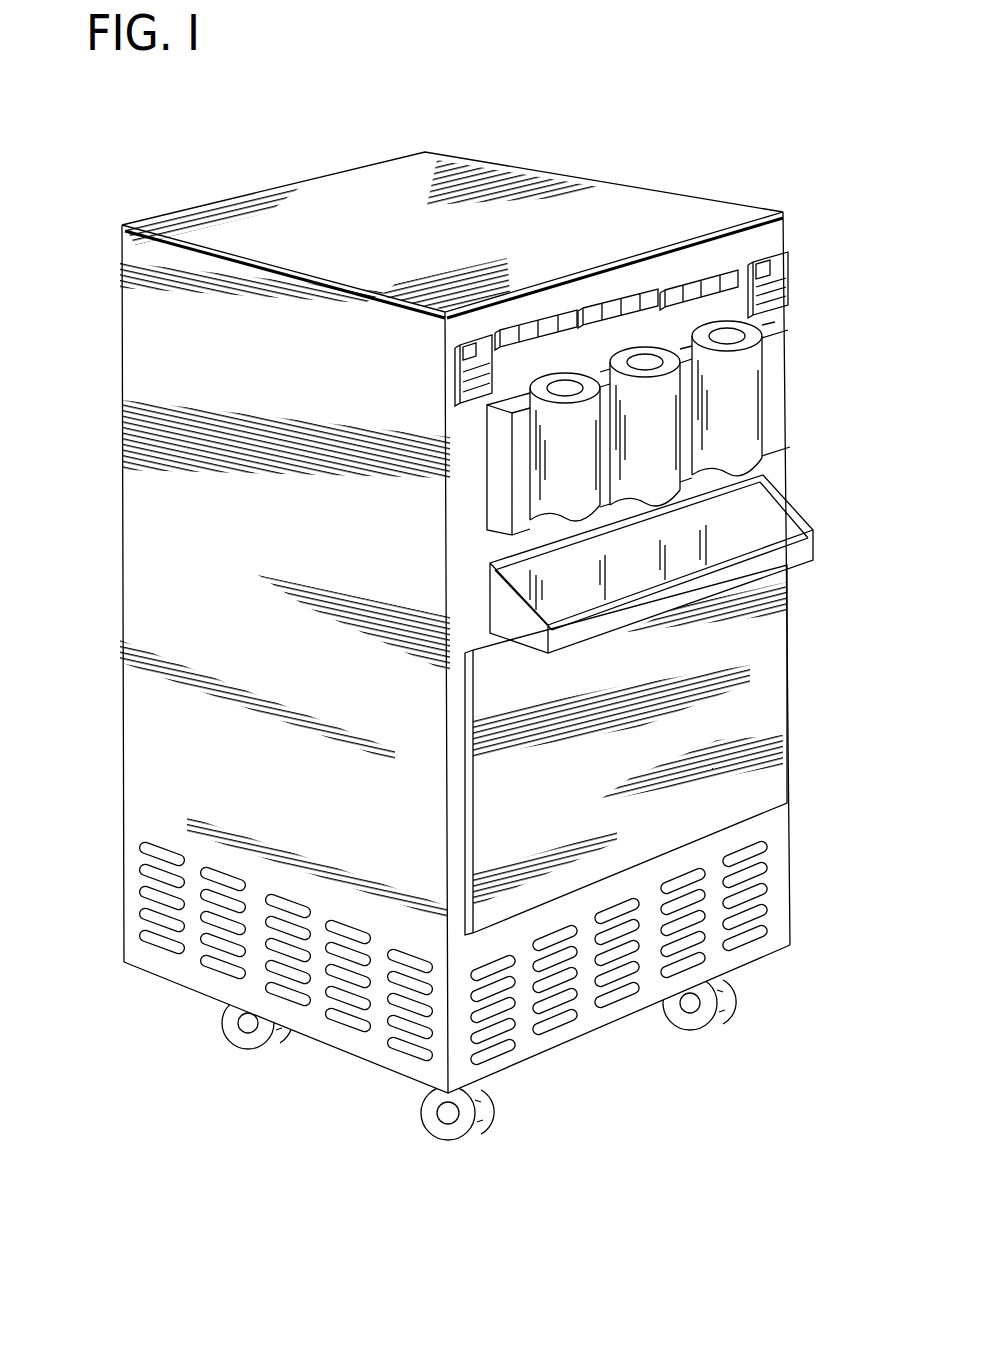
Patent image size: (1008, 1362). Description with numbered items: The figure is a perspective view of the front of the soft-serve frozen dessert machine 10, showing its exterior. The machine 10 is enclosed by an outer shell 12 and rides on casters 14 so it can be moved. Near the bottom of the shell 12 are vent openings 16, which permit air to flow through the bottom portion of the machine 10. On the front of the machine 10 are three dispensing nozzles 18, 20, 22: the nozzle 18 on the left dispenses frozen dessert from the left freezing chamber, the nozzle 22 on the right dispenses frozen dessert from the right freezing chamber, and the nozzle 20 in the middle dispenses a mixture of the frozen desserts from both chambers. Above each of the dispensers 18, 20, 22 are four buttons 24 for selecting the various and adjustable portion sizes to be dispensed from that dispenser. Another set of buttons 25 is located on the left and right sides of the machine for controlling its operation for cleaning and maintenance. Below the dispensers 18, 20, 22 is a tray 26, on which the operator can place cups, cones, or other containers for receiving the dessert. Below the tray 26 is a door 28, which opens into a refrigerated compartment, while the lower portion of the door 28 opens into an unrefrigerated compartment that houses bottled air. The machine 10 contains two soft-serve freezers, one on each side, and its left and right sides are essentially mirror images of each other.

The soft-serve frozen dessert machine 10 is at (492, 95).
The outer shell 12 is at (150, 305).
The casters 14 is at (427, 1122).
The vent openings 16 is at (140, 882).
The dispensing nozzle 18 is at (560, 495).
The dispensing nozzle 20 is at (662, 487).
The dispensing nozzle 22 is at (750, 422).
The buttons 24 is at (693, 285).
The buttons 25 is at (790, 272).
The tray 26 is at (785, 515).
The door 28 is at (500, 790).